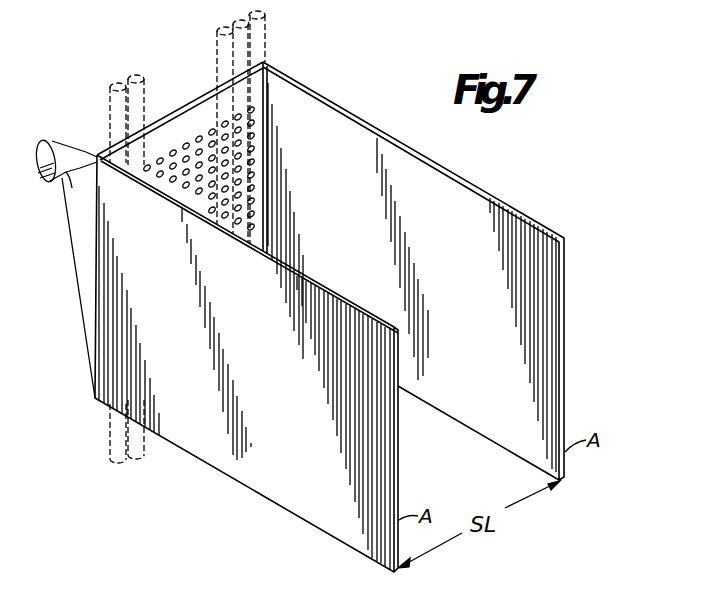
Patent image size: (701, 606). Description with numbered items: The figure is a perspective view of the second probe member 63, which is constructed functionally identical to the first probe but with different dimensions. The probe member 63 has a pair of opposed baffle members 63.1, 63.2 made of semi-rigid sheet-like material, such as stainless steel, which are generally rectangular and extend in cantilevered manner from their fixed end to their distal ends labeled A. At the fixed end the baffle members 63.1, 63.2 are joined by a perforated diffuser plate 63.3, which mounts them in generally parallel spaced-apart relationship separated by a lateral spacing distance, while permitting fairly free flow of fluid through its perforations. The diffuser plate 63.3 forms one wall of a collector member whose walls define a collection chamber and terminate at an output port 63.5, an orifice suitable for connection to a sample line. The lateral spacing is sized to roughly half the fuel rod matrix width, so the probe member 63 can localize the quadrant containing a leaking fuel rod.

The second probe member 63 is at (329, 317).
The baffle member 63.1 is at (348, 181).
The baffle member 63.2 is at (288, 336).
The diffuser plate 63.3 is at (175, 111).
The output port 63.5 is at (60, 150).